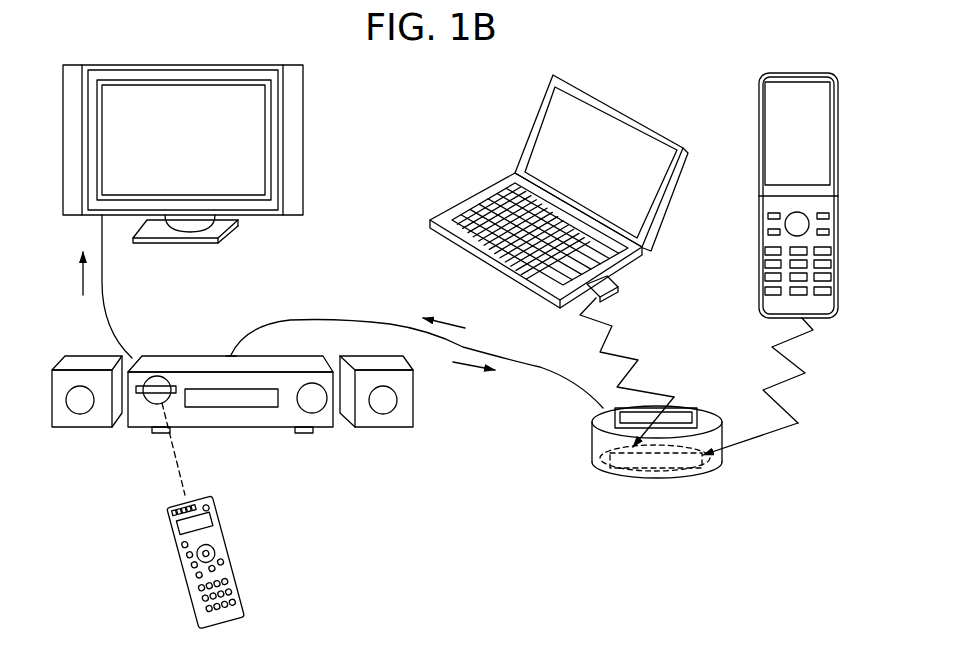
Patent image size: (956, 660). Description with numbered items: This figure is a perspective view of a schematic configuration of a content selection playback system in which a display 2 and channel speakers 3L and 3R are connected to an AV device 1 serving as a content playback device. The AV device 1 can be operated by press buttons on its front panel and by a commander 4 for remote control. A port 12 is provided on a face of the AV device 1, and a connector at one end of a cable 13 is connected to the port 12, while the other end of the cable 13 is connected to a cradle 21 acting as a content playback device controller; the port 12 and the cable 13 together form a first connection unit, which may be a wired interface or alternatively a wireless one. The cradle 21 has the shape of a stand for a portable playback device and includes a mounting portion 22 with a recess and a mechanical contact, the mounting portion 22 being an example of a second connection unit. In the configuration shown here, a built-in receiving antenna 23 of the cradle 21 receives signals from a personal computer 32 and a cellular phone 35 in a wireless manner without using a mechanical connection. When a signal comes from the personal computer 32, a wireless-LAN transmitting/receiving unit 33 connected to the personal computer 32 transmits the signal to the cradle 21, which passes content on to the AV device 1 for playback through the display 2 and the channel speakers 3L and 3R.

The AV device 1 is at (181, 355).
The display 2 is at (303, 137).
The channel speaker 3L is at (77, 427).
The channel speaker 3R is at (387, 427).
The commander 4 is at (222, 560).
The port 12 is at (231, 352).
The cable 13 is at (352, 322).
The cradle 21 is at (600, 463).
The mounting portion 22 is at (683, 416).
The built-in receiving antenna 23 is at (660, 470).
The personal computer 32 is at (488, 193).
The wireless-LAN transmitting/receiving unit 33 is at (617, 287).
The cellular phone 35 is at (762, 223).